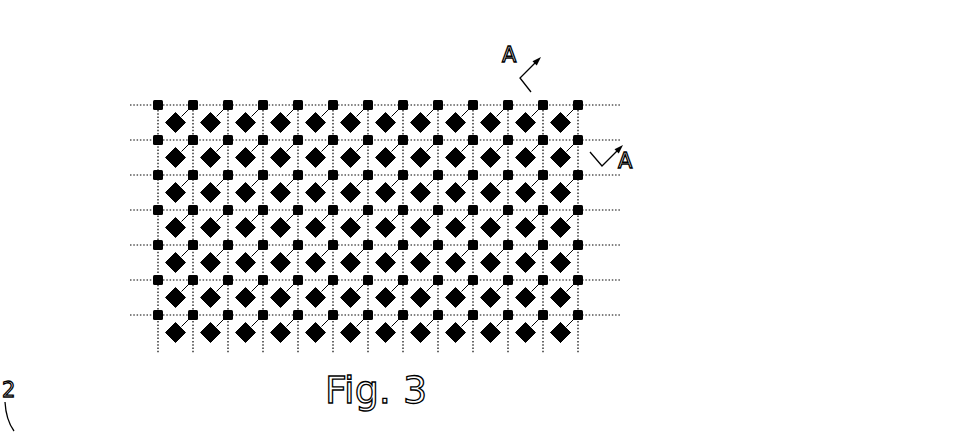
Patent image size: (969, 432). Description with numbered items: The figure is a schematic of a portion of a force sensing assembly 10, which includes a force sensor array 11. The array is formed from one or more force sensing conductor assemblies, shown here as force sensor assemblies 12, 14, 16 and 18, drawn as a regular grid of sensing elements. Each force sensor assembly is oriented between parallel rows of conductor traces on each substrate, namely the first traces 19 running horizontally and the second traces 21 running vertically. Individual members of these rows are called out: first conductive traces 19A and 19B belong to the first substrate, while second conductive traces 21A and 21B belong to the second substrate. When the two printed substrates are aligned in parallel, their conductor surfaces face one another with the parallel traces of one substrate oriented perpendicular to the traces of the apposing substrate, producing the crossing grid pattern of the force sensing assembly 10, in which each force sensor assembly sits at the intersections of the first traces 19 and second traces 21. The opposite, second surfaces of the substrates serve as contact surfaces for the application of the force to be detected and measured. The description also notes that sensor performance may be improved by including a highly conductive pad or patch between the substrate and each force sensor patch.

The force sensing assembly 10 is at (389, 213).
The force sensor array 11 is at (263, 102).
The force sensor assembly 12 is at (563, 116).
The force sensor assembly 14 is at (568, 192).
The force sensor assembly 16 is at (568, 262).
The force sensor assembly 18 is at (568, 332).
The first traces 19 is at (130, 244).
The first conductive trace 19A is at (620, 105).
The first conductive trace 19B is at (620, 140).
The second traces 21 is at (228, 353).
The second conductive trace 21A is at (578, 355).
The second conductive trace 21B is at (543, 355).